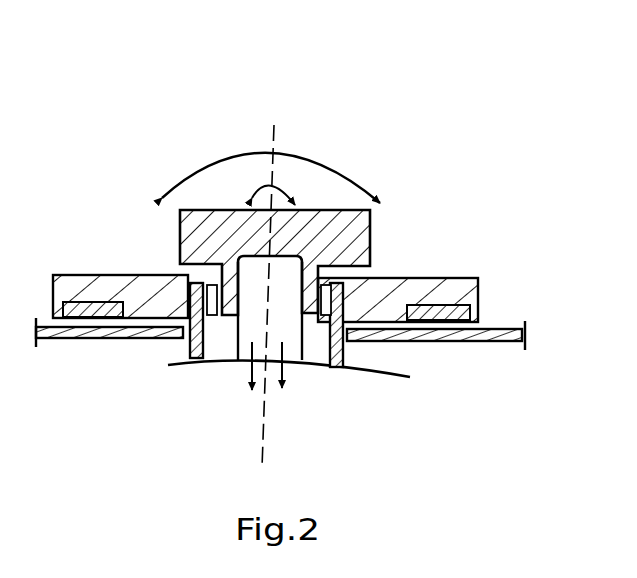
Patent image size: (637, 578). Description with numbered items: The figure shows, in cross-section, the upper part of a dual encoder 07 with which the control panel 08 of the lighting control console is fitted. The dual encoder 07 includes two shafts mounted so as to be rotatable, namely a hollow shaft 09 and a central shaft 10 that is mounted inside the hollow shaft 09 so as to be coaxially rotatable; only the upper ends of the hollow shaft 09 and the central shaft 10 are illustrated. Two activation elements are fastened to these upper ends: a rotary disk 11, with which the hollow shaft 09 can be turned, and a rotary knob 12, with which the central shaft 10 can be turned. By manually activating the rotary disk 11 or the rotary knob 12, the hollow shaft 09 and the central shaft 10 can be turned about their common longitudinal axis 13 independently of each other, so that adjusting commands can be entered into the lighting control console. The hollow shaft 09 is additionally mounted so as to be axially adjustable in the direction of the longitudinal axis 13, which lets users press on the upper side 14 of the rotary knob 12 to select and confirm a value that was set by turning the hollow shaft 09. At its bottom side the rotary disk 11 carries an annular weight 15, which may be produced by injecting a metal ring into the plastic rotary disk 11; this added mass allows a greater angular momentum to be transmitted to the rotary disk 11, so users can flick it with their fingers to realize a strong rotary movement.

The dual encoder 07 is at (463, 106).
The control panel 08 is at (507, 328).
The hollow shaft 09 is at (340, 346).
The central shaft 10 is at (287, 333).
The rotary disk 11 is at (426, 288).
The rotary knob 12 is at (376, 236).
The longitudinal axis 13 is at (274, 140).
The upper side 14 is at (347, 208).
The annular weight 15 is at (452, 311).